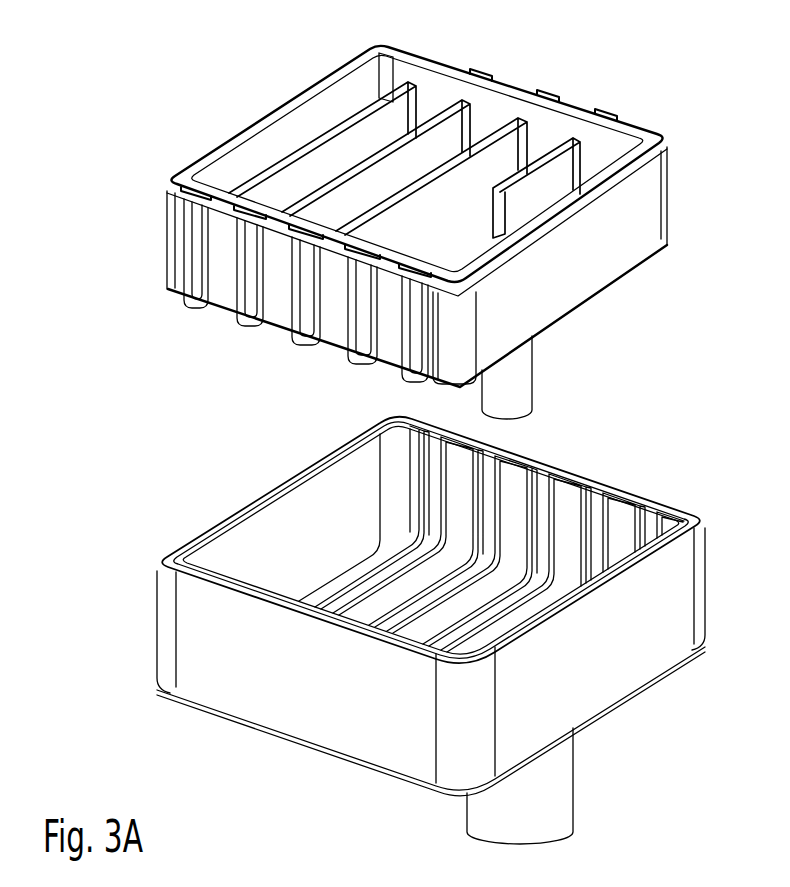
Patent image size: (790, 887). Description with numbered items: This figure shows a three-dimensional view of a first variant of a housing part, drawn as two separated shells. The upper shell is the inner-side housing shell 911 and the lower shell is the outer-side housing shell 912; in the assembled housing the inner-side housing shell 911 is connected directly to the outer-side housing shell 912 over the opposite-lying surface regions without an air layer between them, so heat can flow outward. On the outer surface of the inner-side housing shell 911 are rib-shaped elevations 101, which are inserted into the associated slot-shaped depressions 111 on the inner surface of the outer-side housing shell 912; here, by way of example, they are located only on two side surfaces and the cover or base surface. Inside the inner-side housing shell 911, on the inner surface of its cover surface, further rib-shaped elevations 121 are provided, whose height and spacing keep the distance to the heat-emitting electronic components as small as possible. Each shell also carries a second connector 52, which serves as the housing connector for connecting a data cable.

The inner-side housing shell 911 is at (607, 263).
The outer-side housing shell 912 is at (618, 680).
The second connector 52 is at (518, 383).
The rib-shaped elevations 101 is at (410, 377).
The rib-shaped elevations 121 is at (566, 158).
The slot-shaped depressions 111 is at (653, 520).